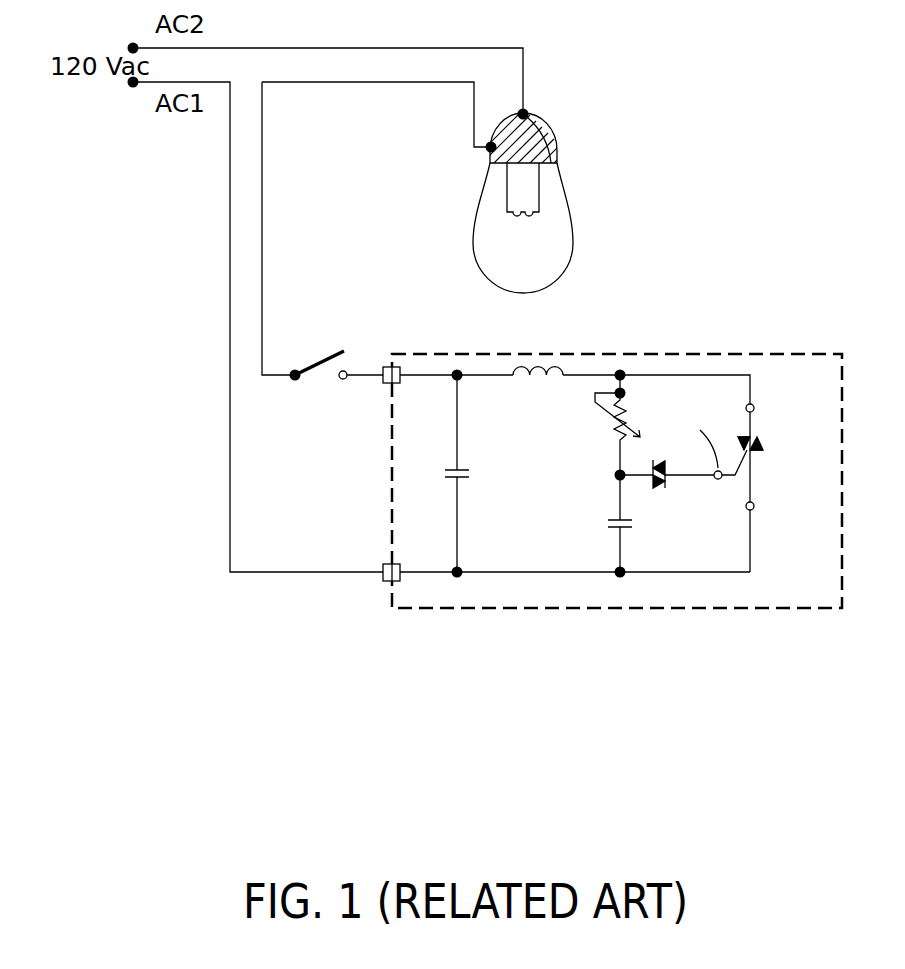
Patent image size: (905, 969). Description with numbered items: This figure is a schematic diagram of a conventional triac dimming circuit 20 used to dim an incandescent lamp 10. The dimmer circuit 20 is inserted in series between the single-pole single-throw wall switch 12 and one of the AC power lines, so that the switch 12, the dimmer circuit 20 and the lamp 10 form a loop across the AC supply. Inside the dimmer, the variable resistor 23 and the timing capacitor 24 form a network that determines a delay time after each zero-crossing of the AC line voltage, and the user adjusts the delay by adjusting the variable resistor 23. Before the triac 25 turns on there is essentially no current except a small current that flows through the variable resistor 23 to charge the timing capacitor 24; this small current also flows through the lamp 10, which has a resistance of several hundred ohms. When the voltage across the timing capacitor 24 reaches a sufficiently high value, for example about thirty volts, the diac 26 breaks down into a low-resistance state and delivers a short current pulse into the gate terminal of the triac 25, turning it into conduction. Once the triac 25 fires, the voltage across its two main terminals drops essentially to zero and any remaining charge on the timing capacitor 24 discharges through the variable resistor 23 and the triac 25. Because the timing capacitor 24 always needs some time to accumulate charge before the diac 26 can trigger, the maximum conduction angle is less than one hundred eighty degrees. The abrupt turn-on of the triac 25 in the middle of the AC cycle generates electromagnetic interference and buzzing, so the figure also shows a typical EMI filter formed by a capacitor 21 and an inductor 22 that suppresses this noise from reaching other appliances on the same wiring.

The incandescent lamp 10 is at (473, 243).
The SPST wall switch 12 is at (333, 354).
The triac dimming circuit 20 is at (836, 587).
The capacitor 21 is at (469, 463).
The inductor 22 is at (541, 382).
The variable resistor R23 23 is at (616, 428).
The capacitor C24 24 is at (608, 523).
The triac 25 is at (766, 440).
The diac 26 is at (673, 481).